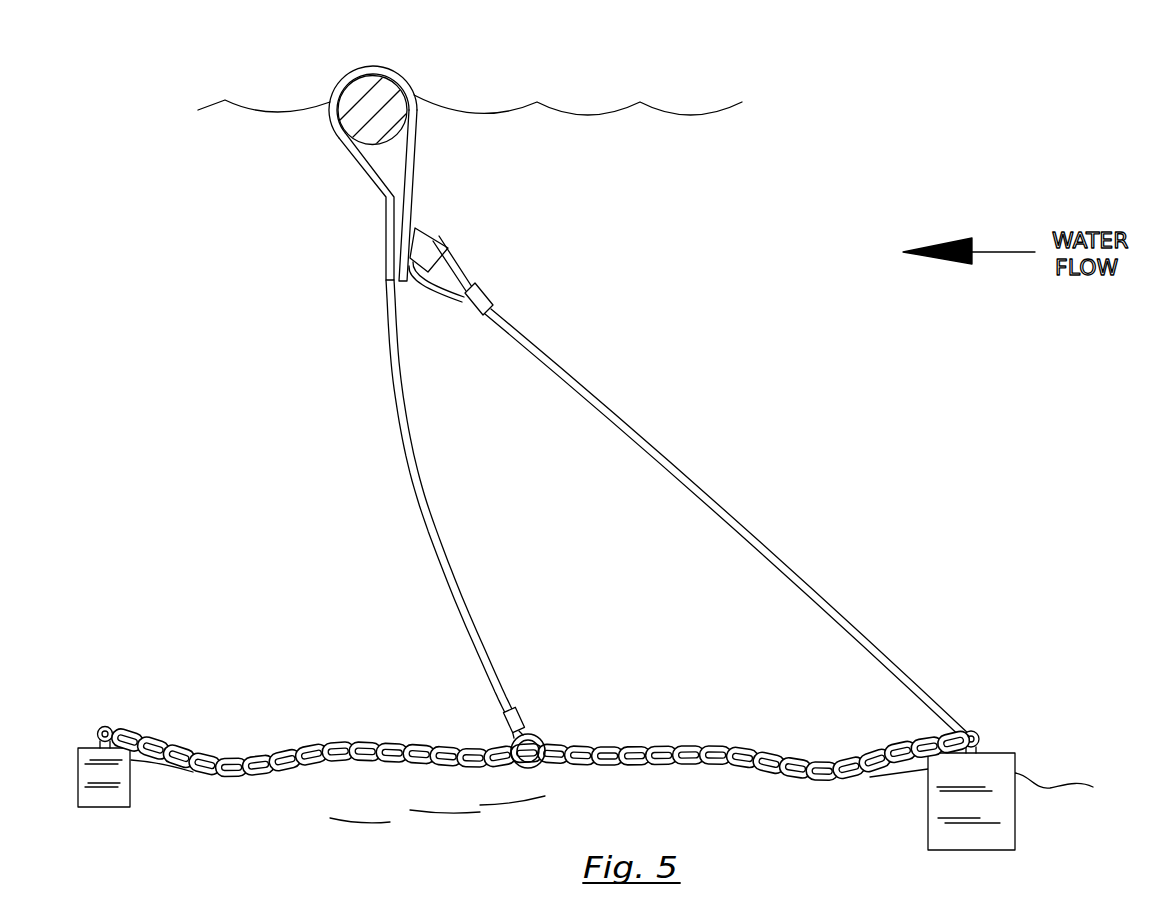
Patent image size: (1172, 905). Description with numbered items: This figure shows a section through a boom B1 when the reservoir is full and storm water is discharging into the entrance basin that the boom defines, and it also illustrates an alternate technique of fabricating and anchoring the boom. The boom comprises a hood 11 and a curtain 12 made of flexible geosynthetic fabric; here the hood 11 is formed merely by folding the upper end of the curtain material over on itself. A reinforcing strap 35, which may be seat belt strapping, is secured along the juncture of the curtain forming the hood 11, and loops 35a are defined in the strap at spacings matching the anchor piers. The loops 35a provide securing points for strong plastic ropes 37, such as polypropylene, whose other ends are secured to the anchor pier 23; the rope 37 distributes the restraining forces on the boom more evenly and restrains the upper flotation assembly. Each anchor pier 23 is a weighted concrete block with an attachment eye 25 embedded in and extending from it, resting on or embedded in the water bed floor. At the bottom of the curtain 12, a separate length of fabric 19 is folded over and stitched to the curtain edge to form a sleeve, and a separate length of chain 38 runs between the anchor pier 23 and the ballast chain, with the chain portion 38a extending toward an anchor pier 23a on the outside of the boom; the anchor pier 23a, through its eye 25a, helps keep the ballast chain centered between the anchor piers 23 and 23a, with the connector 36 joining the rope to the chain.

The hood portion 11 is at (360, 140).
The curtain portion 12 is at (428, 518).
The reinforcing strap 35 is at (423, 234).
The loops 35a is at (468, 263).
The ropes 37 is at (665, 462).
The rope end connector 36 is at (527, 716).
The separate length of fabric 19 is at (512, 740).
The separate length of chain 38 is at (541, 745).
The chain segment 38a is at (238, 753).
The attachment eye 25 is at (977, 731).
The anchor eye 25a is at (102, 727).
The anchor pier 23 is at (290, 820).
The anchor pier 23a is at (117, 805).
The boom B1 is at (460, 76).